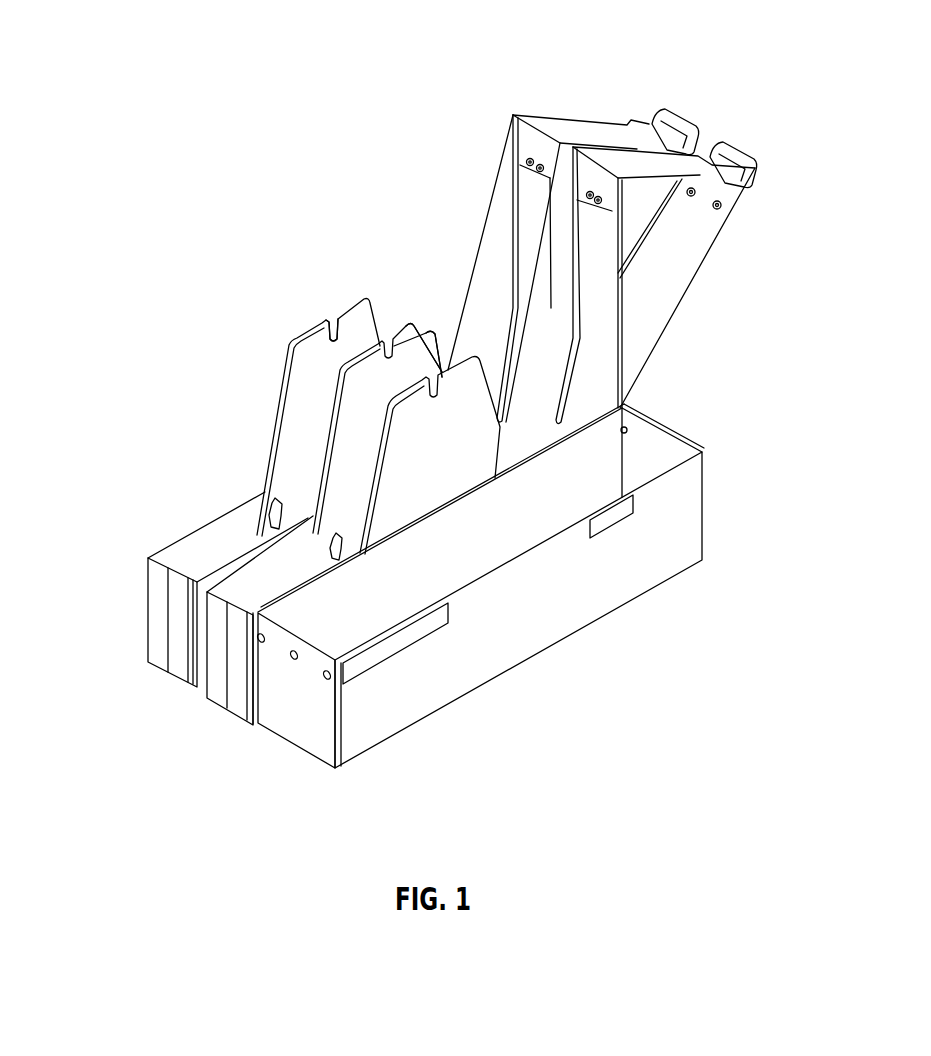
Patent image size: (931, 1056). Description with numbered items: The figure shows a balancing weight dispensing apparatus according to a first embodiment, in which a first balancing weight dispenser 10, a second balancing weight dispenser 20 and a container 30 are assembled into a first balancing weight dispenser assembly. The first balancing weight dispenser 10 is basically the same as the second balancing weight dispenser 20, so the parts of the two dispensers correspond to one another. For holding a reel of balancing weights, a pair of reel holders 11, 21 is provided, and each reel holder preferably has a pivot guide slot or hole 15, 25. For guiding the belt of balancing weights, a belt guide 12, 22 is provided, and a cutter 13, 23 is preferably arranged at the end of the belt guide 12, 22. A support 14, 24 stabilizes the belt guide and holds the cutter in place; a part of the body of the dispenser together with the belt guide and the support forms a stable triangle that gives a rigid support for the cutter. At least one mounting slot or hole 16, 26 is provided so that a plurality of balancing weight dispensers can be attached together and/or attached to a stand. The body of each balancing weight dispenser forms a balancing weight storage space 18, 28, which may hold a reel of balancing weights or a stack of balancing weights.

The first balancing weight dispenser 10 is at (189, 618).
The reel holder 11 is at (316, 406).
The belt guide 12 is at (562, 120).
The cutter 13 is at (665, 114).
The support 14 is at (634, 194).
The pivot guide slot or hole 15 is at (371, 344).
The mounting slot or hole 16 is at (257, 483).
The balancing weight storage space 18 is at (190, 568).
The second balancing weight dispenser 20 is at (220, 619).
The reel holder 21 is at (332, 489).
The belt guide 22 is at (635, 157).
The cutter 23 is at (725, 147).
The support 24 is at (664, 257).
The pivot guide slot or hole 25 is at (420, 378).
The mounting slot or hole 26 is at (345, 565).
The balancing weight storage space 28 is at (257, 593).
The container 30 is at (277, 757).